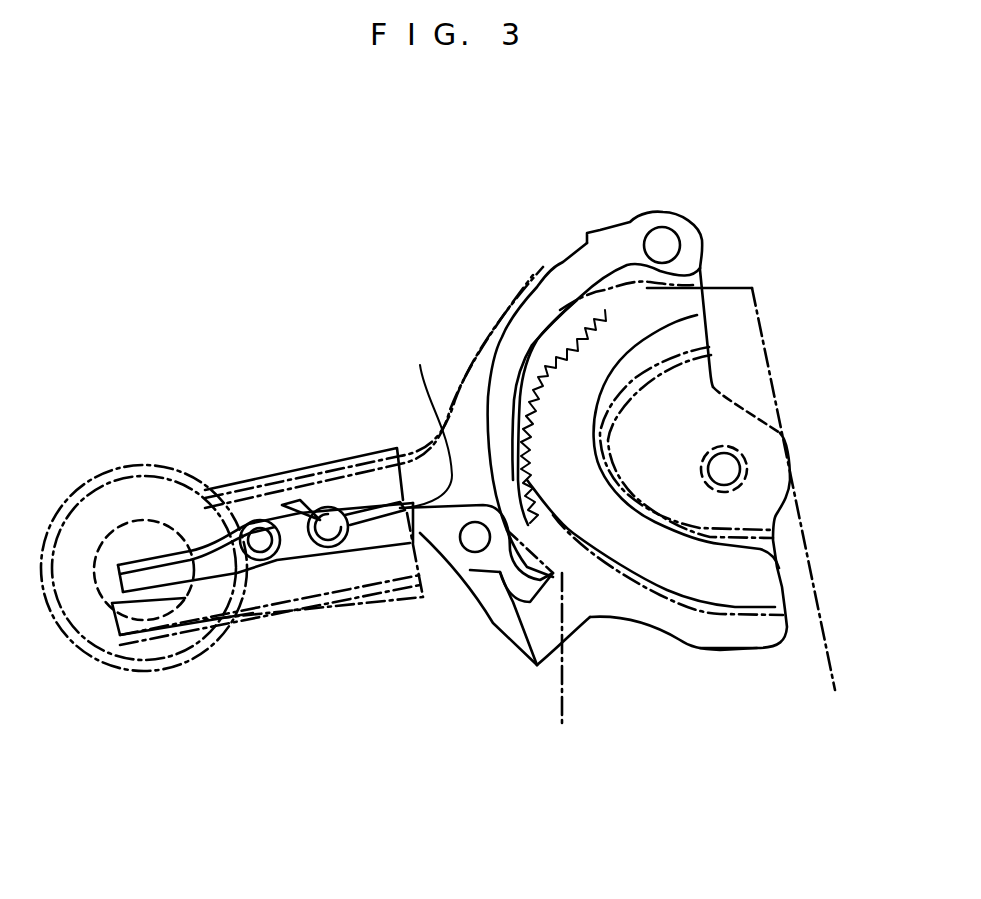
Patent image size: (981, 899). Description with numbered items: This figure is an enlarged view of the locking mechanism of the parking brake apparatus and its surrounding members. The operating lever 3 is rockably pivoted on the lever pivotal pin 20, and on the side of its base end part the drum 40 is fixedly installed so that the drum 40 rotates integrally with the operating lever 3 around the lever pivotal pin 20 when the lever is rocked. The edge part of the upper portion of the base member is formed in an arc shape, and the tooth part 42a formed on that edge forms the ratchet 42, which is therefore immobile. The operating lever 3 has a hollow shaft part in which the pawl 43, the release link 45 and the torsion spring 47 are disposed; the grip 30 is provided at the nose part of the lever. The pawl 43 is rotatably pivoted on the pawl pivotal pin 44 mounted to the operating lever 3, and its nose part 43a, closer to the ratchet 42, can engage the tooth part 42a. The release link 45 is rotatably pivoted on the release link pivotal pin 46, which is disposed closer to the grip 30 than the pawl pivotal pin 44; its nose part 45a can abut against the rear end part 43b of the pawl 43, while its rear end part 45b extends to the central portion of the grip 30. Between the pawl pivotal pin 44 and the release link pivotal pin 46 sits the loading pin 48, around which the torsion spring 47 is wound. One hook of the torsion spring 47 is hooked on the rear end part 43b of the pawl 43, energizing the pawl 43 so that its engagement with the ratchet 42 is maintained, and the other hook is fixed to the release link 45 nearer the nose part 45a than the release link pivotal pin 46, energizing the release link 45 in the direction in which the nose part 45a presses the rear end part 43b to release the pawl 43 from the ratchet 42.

The operating lever 3 is at (230, 630).
The lever pivotal pin 20 is at (722, 470).
The grip 30 is at (88, 652).
The drum 40 is at (667, 308).
The ratchet 42 is at (612, 401).
The tooth part 42a is at (537, 350).
The pawl 43 is at (477, 580).
The nose part 43a is at (590, 617).
The rear end part 43b is at (426, 424).
The pawl pivotal pin 44 is at (473, 540).
The release link 45 is at (130, 565).
The nose part 45a is at (408, 522).
The rear end part 45b is at (140, 597).
The release link pivotal pin 46 is at (259, 538).
The torsion spring 47 is at (352, 497).
The loading pin 48 is at (347, 545).